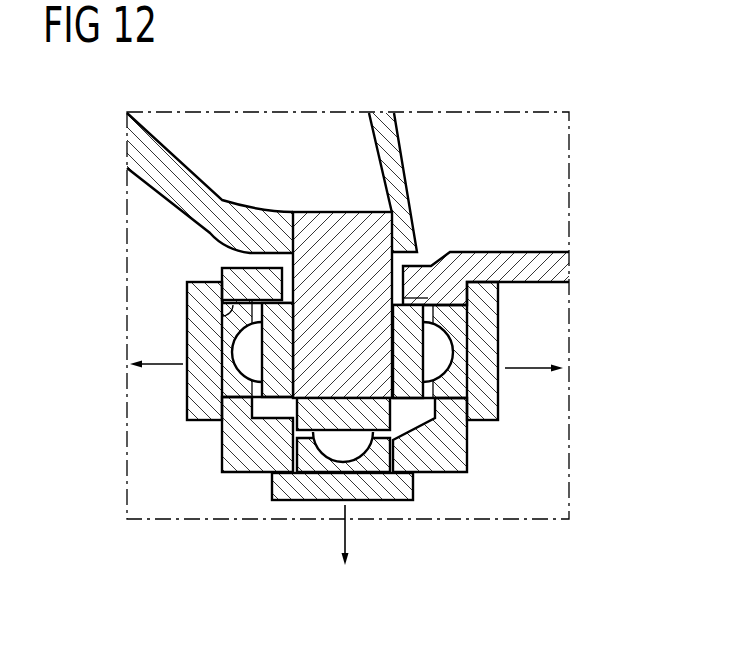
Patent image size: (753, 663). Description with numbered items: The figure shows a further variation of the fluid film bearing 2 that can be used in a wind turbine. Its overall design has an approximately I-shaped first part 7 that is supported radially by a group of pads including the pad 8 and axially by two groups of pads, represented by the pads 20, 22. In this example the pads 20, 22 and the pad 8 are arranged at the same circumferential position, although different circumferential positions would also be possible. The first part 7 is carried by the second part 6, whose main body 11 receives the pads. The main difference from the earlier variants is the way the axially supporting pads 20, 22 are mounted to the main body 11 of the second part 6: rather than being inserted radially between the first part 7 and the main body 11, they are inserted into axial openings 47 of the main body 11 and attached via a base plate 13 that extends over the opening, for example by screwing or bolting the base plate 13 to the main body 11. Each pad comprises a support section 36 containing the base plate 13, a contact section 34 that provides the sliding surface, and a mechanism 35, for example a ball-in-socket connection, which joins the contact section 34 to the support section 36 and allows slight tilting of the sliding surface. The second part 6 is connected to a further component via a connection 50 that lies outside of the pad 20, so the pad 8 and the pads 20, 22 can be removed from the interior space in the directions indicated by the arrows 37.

The fluid film bearing 2 is at (488, 200).
The first part 7 is at (333, 238).
The contact section 34 is at (407, 318).
The connection 50 is at (557, 263).
The pad 20 is at (520, 318).
The base plate 13 is at (190, 385).
The axial opening 47 is at (222, 320).
The support section 36 is at (455, 383).
The mechanism 35 is at (437, 363).
The main body 11 is at (450, 442).
The second part 6 is at (438, 480).
The pad 8 is at (305, 504).
The arrows 37 is at (530, 368).
The pad 22 is at (180, 338).